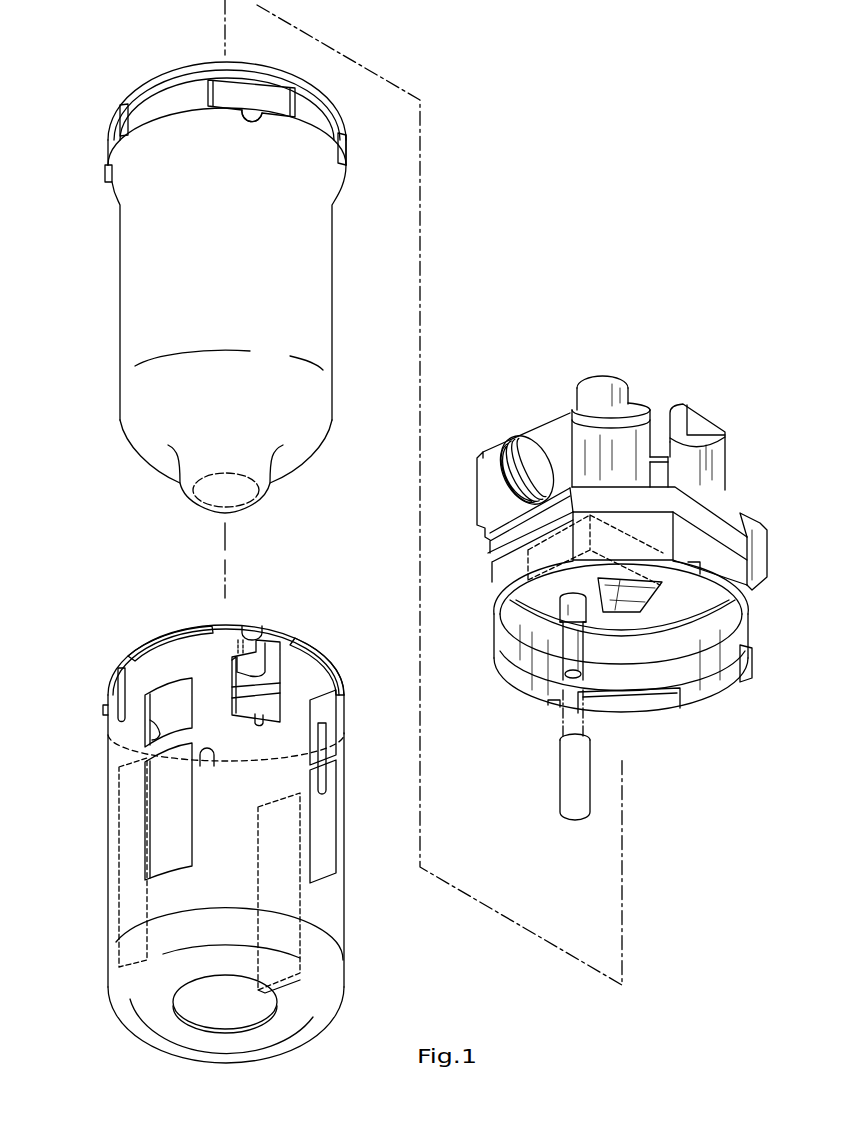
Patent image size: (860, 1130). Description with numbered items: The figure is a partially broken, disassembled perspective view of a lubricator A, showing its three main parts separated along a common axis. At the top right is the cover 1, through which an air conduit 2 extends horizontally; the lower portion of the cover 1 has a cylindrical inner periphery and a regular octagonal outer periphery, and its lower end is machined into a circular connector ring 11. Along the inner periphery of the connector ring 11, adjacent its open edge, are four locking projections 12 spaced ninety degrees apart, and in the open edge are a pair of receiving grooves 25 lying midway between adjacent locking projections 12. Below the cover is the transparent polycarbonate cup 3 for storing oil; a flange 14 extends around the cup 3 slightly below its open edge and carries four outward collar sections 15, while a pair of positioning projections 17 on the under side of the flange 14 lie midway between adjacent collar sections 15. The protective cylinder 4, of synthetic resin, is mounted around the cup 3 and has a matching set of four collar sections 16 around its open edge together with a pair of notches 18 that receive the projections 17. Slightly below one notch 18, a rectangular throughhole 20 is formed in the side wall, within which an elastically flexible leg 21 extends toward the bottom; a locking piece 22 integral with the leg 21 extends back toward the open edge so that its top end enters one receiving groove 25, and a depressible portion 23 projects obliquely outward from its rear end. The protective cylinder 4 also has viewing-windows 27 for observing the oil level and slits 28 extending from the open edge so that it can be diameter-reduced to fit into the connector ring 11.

The cover 1 is at (639, 593).
The air conduit 2 is at (513, 456).
The transparent cup 3 is at (200, 265).
The protective cylinder 4 is at (210, 817).
The connector ring 11 is at (760, 597).
The locking projections 12 is at (744, 670).
The flange 14 is at (250, 95).
The collar sections 15 is at (167, 102).
The collar sections 16 is at (170, 628).
The positioning projections 17 is at (253, 120).
The notches 18 is at (250, 628).
The rectangular throughhole 20 is at (258, 718).
The elastically flexible leg 21 is at (250, 668).
The locking piece 22 is at (270, 678).
The depressible portion 23 is at (283, 700).
The receiving grooves 25 is at (635, 602).
The viewing-windows 27 is at (148, 727).
The slits 28 is at (118, 682).
The lubricator A is at (485, 251).